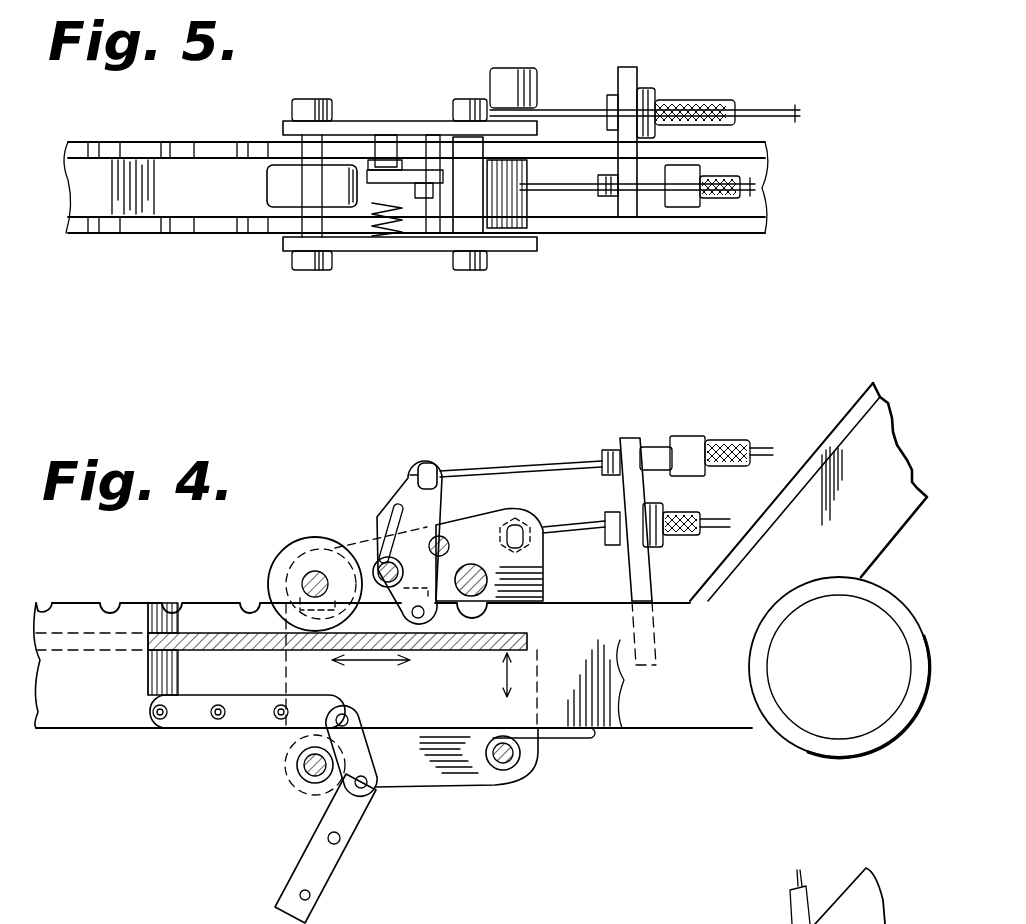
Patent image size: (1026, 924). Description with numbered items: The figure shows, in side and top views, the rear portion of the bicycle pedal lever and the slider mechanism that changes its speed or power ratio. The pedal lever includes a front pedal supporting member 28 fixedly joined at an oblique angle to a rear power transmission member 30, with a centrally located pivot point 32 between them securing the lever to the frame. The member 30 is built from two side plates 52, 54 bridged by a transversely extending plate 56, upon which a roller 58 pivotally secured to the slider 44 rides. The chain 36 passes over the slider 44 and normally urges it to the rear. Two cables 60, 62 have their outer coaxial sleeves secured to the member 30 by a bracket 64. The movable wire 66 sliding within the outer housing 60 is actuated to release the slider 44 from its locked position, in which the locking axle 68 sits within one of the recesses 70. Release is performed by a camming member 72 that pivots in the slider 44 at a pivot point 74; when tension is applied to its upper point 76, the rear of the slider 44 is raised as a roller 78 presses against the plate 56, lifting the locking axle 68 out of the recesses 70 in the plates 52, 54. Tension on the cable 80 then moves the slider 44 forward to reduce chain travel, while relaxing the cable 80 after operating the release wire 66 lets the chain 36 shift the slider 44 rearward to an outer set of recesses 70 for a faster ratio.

In FIG. 4, the front pedal supporting member 28 is at (865, 455).
In FIG. 5, the rear power transmission member 30 is at (770, 168).
In FIG. 4, the rear power transmission member 30 is at (655, 730).
In FIG. 4, the pivot point 32 is at (838, 667).
In FIG. 4, the chain 36 is at (325, 868).
In FIG. 5, the slider 44 is at (335, 121).
In FIG. 4, the slider 44 is at (455, 762).
In FIG. 5, the side plate 52 is at (135, 235).
In FIG. 4, the side plate 52 is at (80, 700).
In FIG. 5, the side plate 54 is at (128, 142).
In FIG. 4, the side plate 54 is at (195, 670).
In FIG. 5, the transversely extending plate 56 is at (180, 180).
In FIG. 4, the transversely extending plate 56 is at (180, 620).
In FIG. 5, the roller 58 is at (285, 180).
In FIG. 4, the roller 58 is at (275, 540).
In FIG. 5, the cable 60 is at (720, 198).
In FIG. 4, the cable 60 is at (720, 450).
In FIG. 5, the cable 62 is at (700, 110).
In FIG. 4, the cable 62 is at (680, 548).
In FIG. 5, the bracket 64 is at (627, 85).
In FIG. 4, the bracket 64 is at (630, 445).
In FIG. 5, the movable wire 66 is at (575, 190).
In FIG. 4, the movable wire 66 is at (560, 470).
In FIG. 5, the locking axle 68 is at (475, 195).
In FIG. 4, the locking axle 68 is at (545, 596).
In FIG. 5, the recesses 70 is at (247, 235).
In FIG. 4, the recesses 70 is at (106, 603).
In FIG. 5, the camming member 72 is at (418, 170).
In FIG. 4, the camming member 72 is at (405, 490).
In FIG. 5, the pivot point 74 is at (388, 135).
In FIG. 4, the pivot point 74 is at (390, 557).
In FIG. 5, the upper point 76 is at (432, 238).
In FIG. 4, the upper point 76 is at (440, 470).
In FIG. 4, the roller 78 is at (447, 650).
In FIG. 5, the cable 80 is at (568, 110).
In FIG. 4, the cable 80 is at (562, 522).